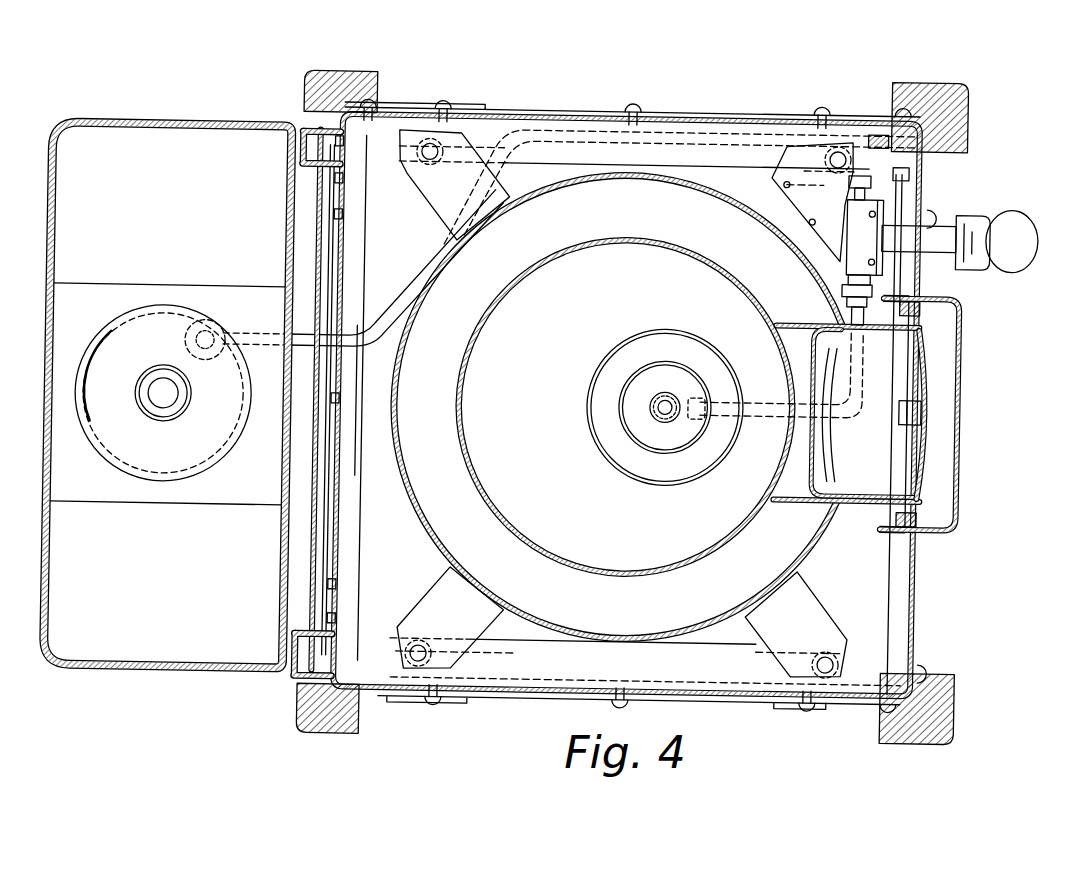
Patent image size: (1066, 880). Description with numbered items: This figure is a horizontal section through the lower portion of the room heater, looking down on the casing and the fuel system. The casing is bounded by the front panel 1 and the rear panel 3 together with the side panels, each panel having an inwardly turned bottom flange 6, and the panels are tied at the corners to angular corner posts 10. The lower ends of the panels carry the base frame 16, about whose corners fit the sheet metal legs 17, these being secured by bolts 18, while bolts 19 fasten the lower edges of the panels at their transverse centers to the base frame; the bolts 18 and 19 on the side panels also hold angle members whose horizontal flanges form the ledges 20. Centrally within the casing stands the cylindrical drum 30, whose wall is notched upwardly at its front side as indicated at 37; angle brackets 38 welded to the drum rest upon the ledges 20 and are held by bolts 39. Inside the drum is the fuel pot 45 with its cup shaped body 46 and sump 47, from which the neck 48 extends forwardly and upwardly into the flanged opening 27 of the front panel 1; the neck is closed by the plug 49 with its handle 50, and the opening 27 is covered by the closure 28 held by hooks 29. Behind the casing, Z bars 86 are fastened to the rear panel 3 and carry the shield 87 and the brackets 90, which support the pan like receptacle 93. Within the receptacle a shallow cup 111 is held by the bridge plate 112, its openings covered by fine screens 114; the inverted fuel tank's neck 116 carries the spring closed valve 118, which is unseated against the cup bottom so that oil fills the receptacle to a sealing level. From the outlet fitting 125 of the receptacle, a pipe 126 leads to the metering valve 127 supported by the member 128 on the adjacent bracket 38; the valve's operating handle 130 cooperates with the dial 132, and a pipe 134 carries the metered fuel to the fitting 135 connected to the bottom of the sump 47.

The front panel 1 is at (914, 560).
The rear panel 3 is at (345, 502).
The bottom flange 6 is at (355, 550).
The corner posts 10 is at (343, 116).
The base frame 16 is at (703, 110).
The legs 17 is at (299, 102).
The bolts 18 is at (438, 105).
The bolts 19 is at (628, 105).
The ledges 20 is at (560, 151).
The opening 27 is at (952, 514).
The closure 28 is at (961, 376).
The hooks 29 is at (895, 292).
The cylindrical drum 30 is at (430, 278).
The notch 37 is at (887, 540).
The angle brackets 38 is at (426, 202).
The bolts 39 is at (429, 163).
The fuel pot 45 is at (606, 231).
The body 46 is at (548, 561).
The sump 47 is at (659, 367).
The neck 48 is at (807, 501).
The plug 49 is at (868, 415).
The handle 50 is at (903, 392).
The Z bars 86 is at (312, 182).
The shield 87 is at (312, 256).
The brackets 90 is at (175, 126).
The receptacle 93 is at (55, 223).
The shallow cup 111 is at (148, 328).
The bridge plate 112 is at (115, 506).
The screens 114 is at (119, 344).
The neck 116 is at (140, 401).
The spring closed valve 118 is at (165, 420).
The outlet fitting 125 is at (228, 300).
The pipe 126 is at (422, 252).
The valve 127 is at (962, 249).
The member 128 is at (845, 236).
The operating handle 130 is at (1017, 218).
The dial 132 is at (977, 209).
The pipe 134 is at (770, 418).
The fitting 135 is at (680, 431).